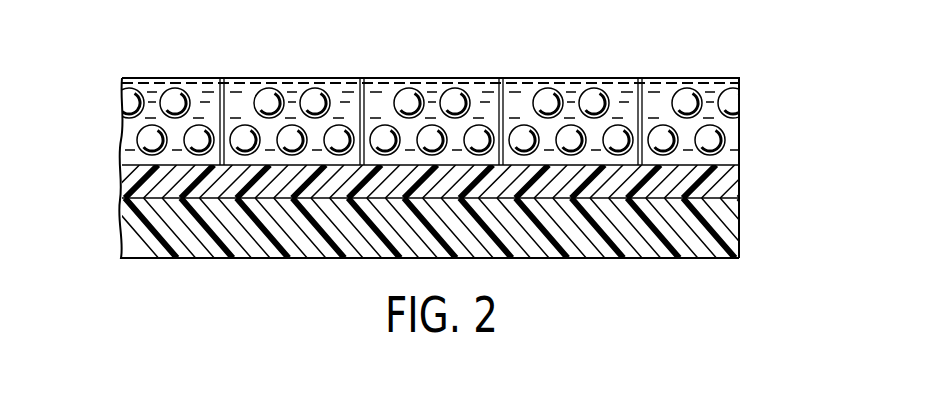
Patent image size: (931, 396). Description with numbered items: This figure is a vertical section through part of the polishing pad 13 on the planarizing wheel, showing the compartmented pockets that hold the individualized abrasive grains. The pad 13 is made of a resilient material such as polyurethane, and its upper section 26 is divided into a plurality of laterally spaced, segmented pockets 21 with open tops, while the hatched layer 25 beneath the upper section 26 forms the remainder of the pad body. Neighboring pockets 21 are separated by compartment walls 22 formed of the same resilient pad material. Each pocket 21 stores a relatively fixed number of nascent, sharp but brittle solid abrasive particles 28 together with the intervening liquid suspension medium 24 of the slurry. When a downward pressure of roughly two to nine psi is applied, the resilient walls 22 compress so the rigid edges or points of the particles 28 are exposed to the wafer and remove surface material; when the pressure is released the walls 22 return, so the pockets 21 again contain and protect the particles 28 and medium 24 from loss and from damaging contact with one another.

The polishing pad 13 is at (104, 92).
The compartmented pockets 21 is at (515, 93).
The compartment walls 22 is at (207, 100).
The liquid suspension medium 24 is at (657, 97).
The lower backing layer 25 is at (724, 228).
The upper section 26 is at (724, 182).
The solid abrasive particles 28 is at (309, 98).